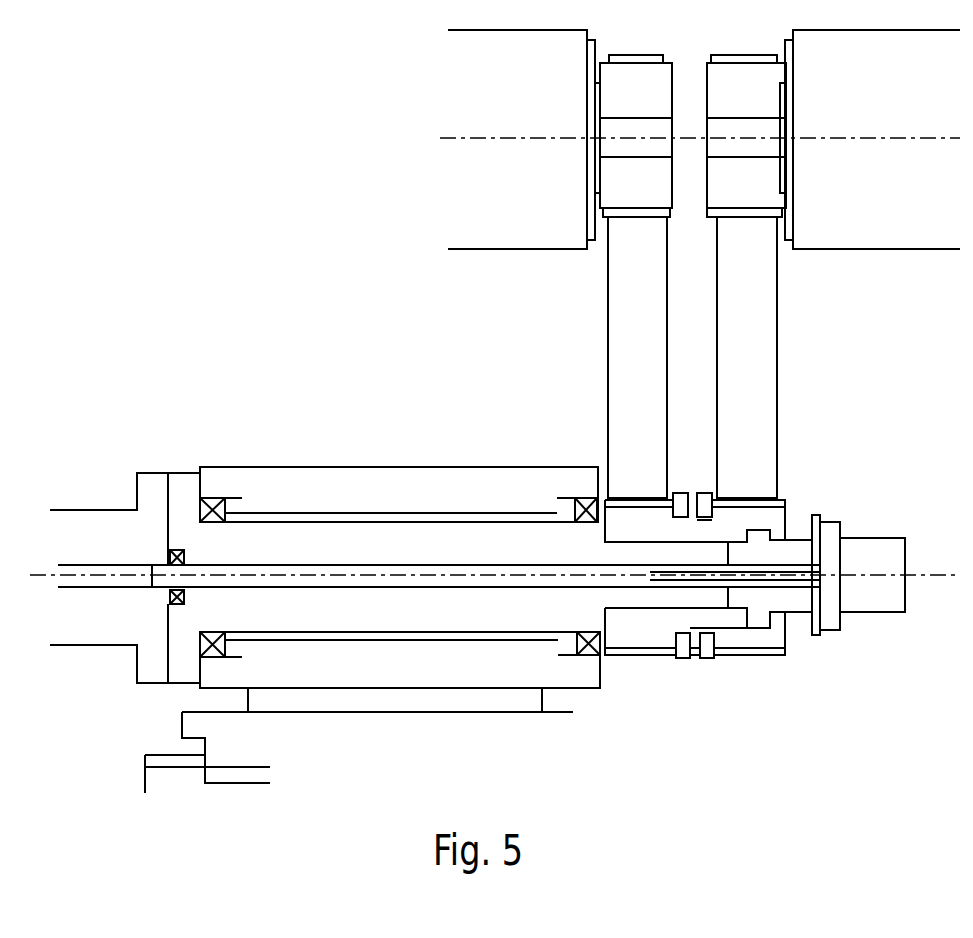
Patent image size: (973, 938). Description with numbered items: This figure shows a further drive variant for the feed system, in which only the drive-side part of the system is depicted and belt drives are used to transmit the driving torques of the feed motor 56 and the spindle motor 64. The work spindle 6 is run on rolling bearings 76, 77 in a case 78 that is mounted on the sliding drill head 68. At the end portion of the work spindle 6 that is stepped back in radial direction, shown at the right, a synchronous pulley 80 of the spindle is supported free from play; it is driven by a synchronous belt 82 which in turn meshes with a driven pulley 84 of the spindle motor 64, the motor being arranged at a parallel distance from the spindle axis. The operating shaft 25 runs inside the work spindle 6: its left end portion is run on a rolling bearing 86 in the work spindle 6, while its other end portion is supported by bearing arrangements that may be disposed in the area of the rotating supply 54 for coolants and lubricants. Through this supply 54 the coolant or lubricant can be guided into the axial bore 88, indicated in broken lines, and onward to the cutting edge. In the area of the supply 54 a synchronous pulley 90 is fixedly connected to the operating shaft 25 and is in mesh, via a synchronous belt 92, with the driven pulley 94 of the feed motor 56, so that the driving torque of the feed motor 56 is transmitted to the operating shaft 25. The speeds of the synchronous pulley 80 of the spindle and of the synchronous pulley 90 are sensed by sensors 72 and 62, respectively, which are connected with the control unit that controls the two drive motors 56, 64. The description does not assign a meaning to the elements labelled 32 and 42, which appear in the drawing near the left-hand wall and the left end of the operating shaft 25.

The work spindle 6 is at (452, 618).
The operating shaft 25 is at (318, 583).
The frame wall 32 is at (72, 527).
The shaft end portion 42 is at (105, 568).
The supply for coolants/lubricants 54 is at (870, 600).
The feed motor 56 is at (880, 118).
The sensor 62 is at (713, 497).
The spindle motor 64 is at (532, 120).
The sliding drill head 68 is at (193, 722).
The sensor 72 is at (690, 658).
The rolling bearing 76 is at (220, 500).
The rolling bearing 77 is at (587, 657).
The case 78 is at (335, 478).
The synchronous pulley of the spindle 80 is at (650, 640).
The synchronous belt 82 is at (622, 337).
The driven pulley of the spindle motor 84 is at (622, 105).
The rolling bearing 86 is at (177, 550).
The axial bore 88 is at (783, 582).
The synchronous pulley 90 is at (807, 498).
The synchronous belt 92 is at (760, 303).
The driven pulley 94 is at (732, 105).